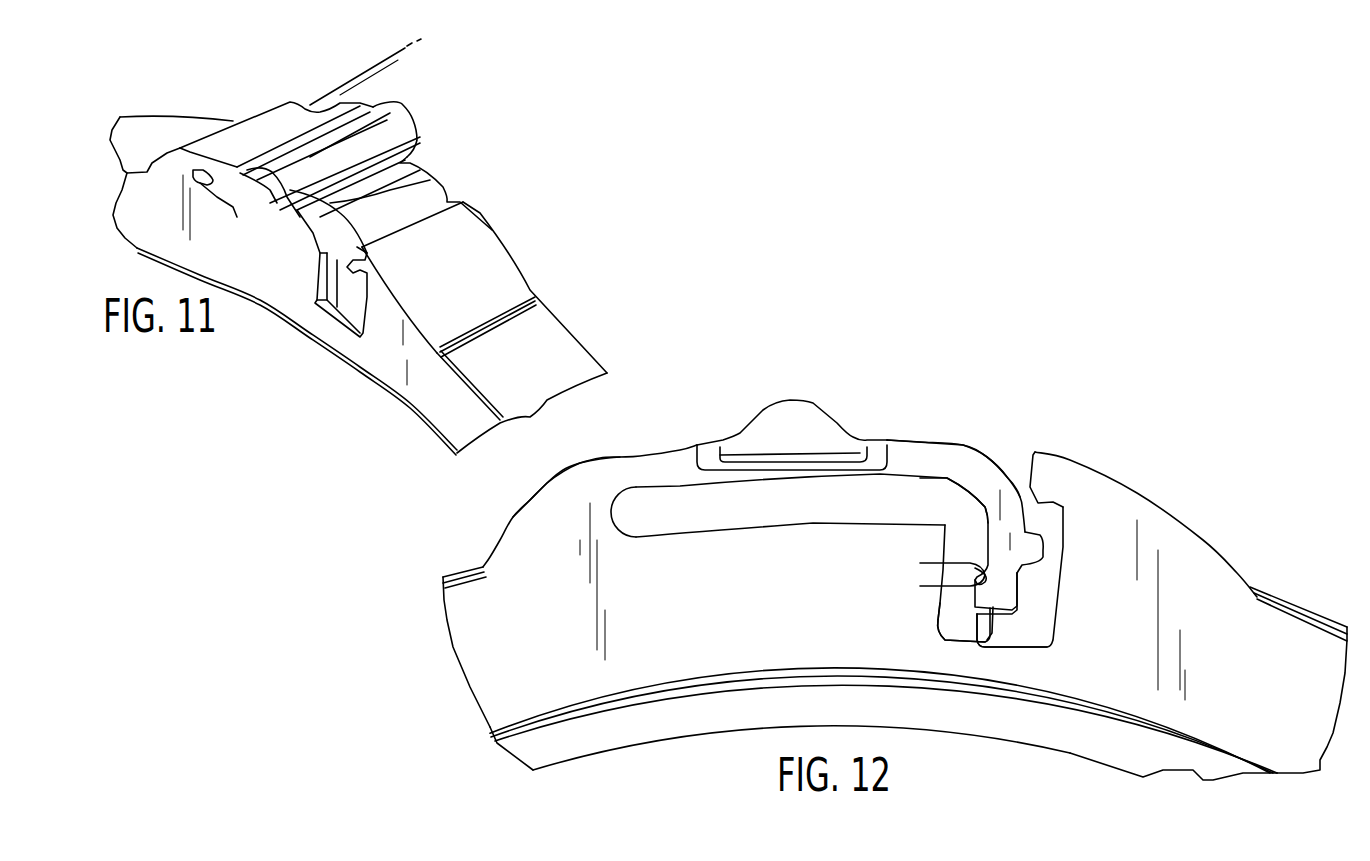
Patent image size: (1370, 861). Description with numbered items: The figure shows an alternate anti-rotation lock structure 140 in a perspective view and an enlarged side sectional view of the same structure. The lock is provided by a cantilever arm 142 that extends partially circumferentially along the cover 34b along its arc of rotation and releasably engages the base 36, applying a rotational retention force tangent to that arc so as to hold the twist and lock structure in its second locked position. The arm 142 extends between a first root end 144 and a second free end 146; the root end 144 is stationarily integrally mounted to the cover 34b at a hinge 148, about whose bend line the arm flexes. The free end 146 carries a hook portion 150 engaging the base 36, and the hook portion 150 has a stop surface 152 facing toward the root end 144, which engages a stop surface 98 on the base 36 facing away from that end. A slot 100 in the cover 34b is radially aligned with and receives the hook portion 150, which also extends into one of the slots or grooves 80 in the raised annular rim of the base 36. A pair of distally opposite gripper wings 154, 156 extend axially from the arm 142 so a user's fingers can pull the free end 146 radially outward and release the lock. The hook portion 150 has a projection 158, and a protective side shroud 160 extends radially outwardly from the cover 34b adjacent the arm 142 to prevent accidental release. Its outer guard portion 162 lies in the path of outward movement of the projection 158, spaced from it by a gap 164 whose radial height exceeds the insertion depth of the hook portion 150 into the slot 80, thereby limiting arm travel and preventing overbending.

In FIG. 11, the cover 34b is at (140, 212).
In FIG. 12, the cover 34b is at (458, 633).
In FIG. 11, the base 36 is at (370, 80).
In FIG. 12, the base 36 is at (1017, 643).
In FIG. 12, the slots or grooves 80 is at (965, 623).
In FIG. 12, the stop surface 98 is at (983, 567).
In FIG. 12, the slot 100 is at (950, 542).
In FIG. 11, the anti-rotation lock structure 140 is at (437, 127).
In FIG. 11, the cantilever arm 142 is at (400, 163).
In FIG. 12, the cantilever arm 142 is at (898, 447).
In FIG. 12, the first root end 144 is at (627, 457).
In FIG. 12, the second free end 146 is at (960, 448).
In FIG. 11, the hinge 148 is at (183, 163).
In FIG. 12, the hinge 148 is at (590, 475).
In FIG. 12, the hook portion 150 is at (993, 632).
In FIG. 12, the stop surface 152 is at (985, 582).
In FIG. 11, the gripper wing 154 is at (390, 113).
In FIG. 11, the gripper wing 156 is at (253, 180).
In FIG. 12, the projection 158 is at (1037, 553).
In FIG. 12, the protective side shroud 160 is at (1157, 505).
In FIG. 12, the outer guard portion 162 is at (1043, 467).
In FIG. 12, the gap 164 is at (1042, 510).